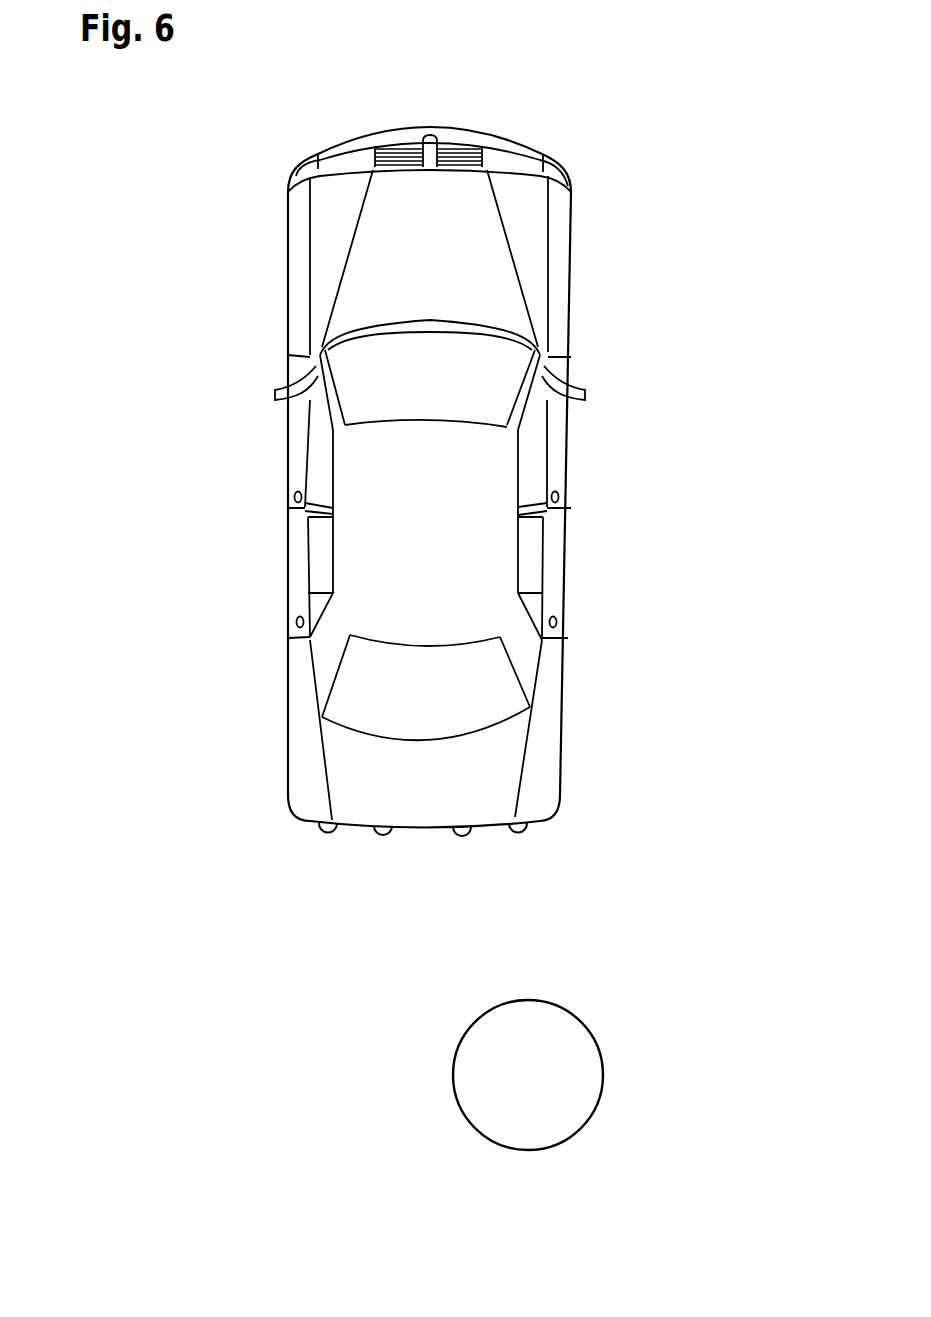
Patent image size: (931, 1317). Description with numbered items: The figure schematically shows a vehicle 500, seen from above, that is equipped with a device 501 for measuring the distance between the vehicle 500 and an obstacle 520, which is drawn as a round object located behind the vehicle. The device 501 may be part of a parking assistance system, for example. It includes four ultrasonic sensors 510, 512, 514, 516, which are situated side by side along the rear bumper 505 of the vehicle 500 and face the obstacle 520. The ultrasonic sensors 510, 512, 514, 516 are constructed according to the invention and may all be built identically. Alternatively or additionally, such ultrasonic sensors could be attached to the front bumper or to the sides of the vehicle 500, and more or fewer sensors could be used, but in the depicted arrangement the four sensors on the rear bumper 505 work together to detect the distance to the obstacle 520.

The vehicle 500 is at (648, 120).
The device 501 is at (608, 927).
The rear bumper 505 is at (540, 820).
The ultrasonic sensor 510 is at (518, 837).
The ultrasonic sensor 512 is at (462, 837).
The ultrasonic sensor 514 is at (384, 837).
The ultrasonic sensor 516 is at (320, 837).
The obstacle 520 is at (580, 1087).